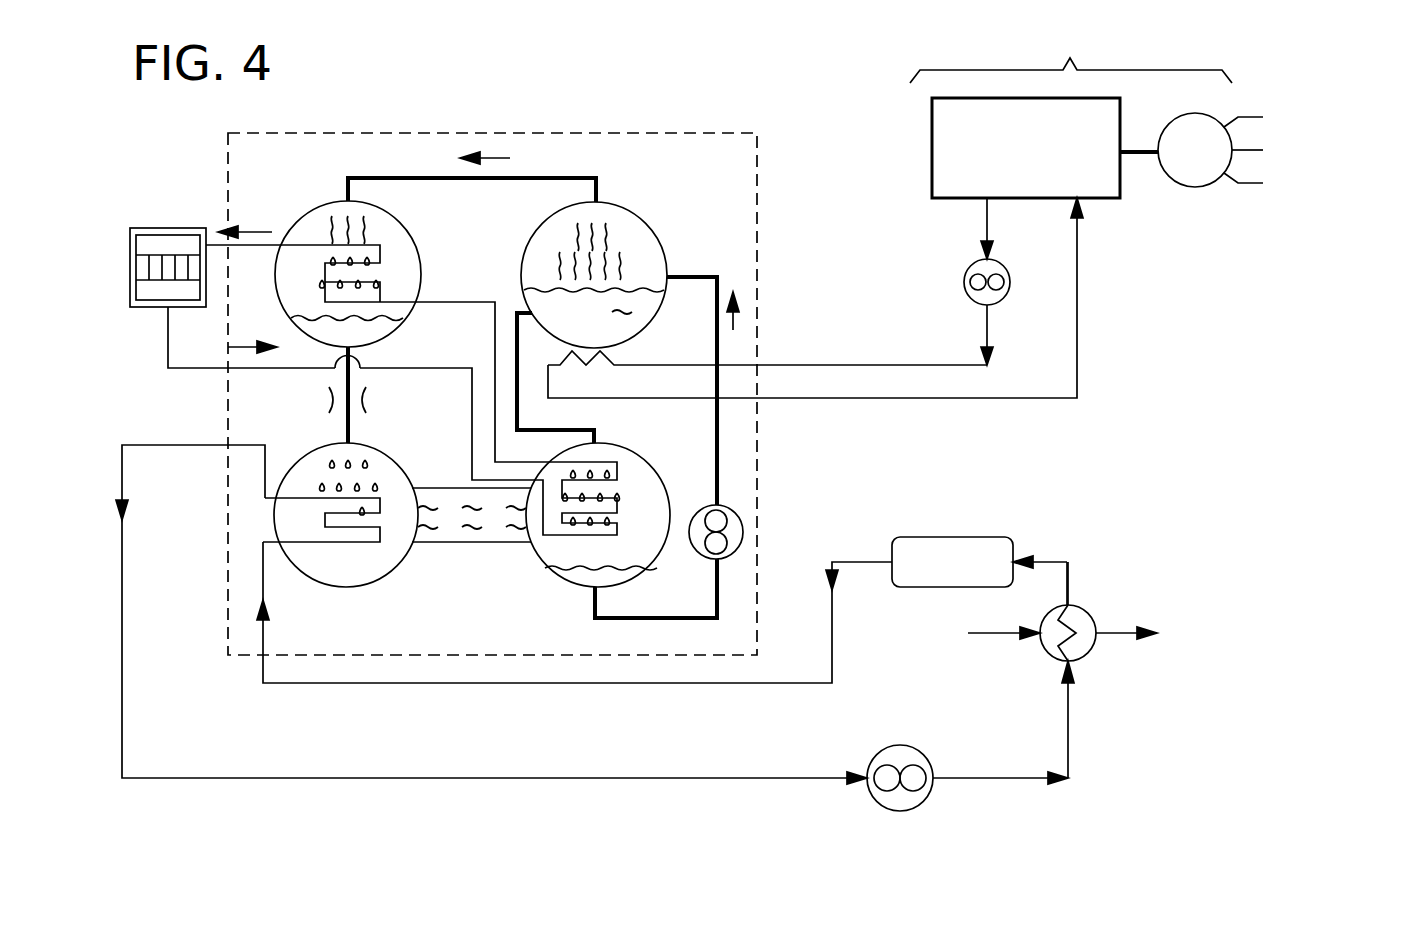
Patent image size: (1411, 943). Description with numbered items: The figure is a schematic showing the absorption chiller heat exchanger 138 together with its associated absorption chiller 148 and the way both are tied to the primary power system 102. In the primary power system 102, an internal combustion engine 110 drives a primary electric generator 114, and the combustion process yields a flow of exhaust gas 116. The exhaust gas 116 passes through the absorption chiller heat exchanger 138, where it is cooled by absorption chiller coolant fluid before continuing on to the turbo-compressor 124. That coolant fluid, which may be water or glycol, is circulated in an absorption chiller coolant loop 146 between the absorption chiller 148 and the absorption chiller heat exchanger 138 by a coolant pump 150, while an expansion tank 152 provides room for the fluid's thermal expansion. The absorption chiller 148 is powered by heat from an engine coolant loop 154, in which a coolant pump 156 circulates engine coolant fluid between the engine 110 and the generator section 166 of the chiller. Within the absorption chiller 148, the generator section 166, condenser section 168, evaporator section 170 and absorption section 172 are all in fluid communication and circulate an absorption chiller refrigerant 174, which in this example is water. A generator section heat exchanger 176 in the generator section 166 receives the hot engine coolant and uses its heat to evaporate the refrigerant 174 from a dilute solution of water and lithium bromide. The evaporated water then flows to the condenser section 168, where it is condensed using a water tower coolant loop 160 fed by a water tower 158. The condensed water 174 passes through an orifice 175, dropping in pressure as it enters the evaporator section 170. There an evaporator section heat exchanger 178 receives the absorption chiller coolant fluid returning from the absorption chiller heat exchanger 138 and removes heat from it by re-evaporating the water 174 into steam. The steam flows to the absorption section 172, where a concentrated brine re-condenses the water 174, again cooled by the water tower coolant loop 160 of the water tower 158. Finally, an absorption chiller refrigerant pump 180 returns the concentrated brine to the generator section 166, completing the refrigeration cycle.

The primary power system 102 is at (1071, 56).
The internal combustion engine 110 is at (1026, 148).
The primary electric generator 114 is at (1175, 185).
The exhaust gas 116 is at (985, 634).
The turbo-compressor 124 is at (1275, 648).
The absorption chiller heat exchanger 138 is at (1088, 655).
The absorption chiller coolant loop 146 is at (1068, 755).
The absorption chiller 148 is at (600, 133).
The coolant pump 150 is at (918, 748).
The expansion tank 152 is at (662, 610).
The engine coolant loop 154 is at (900, 365).
The coolant pump 156 is at (1000, 303).
The water tower 158 is at (165, 228).
The water tower coolant loop 160 is at (238, 228).
The generator section 166 is at (652, 230).
The condenser section 168 is at (322, 207).
The evaporator section 170 is at (380, 452).
The absorption section 172 is at (545, 562).
The absorption chiller refrigerant 174 is at (490, 158).
The orifice 175 is at (333, 400).
The generator section heat exchanger 176 is at (616, 357).
The evaporator section heat exchanger 178 is at (355, 545).
The absorption chiller refrigerant pump 180 is at (737, 513).